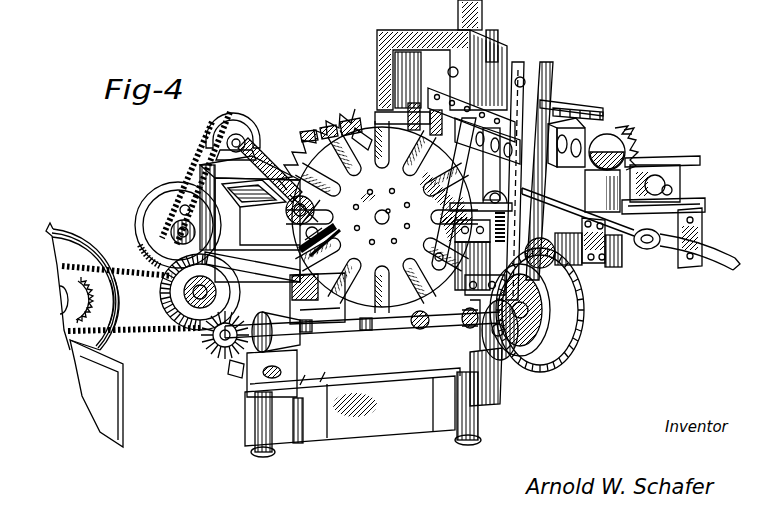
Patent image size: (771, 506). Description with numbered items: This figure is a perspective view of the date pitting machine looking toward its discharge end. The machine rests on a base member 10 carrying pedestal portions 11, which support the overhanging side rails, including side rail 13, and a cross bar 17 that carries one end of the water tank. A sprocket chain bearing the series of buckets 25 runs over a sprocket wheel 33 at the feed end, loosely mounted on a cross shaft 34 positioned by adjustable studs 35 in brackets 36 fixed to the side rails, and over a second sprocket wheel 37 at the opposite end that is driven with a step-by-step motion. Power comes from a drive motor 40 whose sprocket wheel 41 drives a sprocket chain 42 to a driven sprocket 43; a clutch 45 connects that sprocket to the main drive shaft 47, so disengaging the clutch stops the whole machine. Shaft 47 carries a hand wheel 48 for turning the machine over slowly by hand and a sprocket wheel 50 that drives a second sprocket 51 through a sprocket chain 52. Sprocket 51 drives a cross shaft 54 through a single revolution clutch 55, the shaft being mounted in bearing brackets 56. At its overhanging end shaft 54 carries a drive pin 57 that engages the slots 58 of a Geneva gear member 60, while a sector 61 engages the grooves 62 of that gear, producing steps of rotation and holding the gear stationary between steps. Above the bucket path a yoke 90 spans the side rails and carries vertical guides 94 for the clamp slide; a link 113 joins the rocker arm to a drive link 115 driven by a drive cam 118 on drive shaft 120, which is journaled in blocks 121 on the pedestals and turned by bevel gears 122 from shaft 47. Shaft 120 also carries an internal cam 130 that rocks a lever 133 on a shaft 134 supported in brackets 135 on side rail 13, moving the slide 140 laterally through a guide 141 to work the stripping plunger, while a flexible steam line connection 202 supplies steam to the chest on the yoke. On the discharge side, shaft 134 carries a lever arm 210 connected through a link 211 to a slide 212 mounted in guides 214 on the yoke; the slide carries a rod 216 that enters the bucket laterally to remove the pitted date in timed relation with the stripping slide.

The base member 10 is at (380, 455).
The pedestal portions 11 is at (433, 431).
The side rail 13 is at (704, 224).
The cross bar 17 is at (205, 192).
The buckets 25 is at (624, 140).
The sprocket wheel 33 is at (648, 146).
The cross shaft 34 is at (690, 200).
The adjustable studs 35 is at (675, 172).
The brackets 36 is at (660, 172).
The sprocket wheel 37 is at (338, 146).
The drive motor 40 is at (58, 232).
The sprocket wheel 41 is at (70, 318).
The sprocket chain 42 is at (137, 345).
The driven sprocket 43 is at (172, 334).
The clutch 45 is at (165, 300).
The main drive shaft 47 is at (215, 366).
The hand wheel 48 is at (140, 206).
The sprocket wheel 50 is at (172, 232).
The second sprocket 51 is at (228, 112).
The sprocket chain 52 is at (205, 172).
The cross shaft 54 is at (262, 128).
The single revolution clutch 55 is at (243, 128).
The bearing brackets 56 is at (215, 146).
The drive pin 57 is at (292, 278).
The slots 58 is at (318, 250).
The Geneva gear member 60 is at (322, 336).
The sector 61 is at (308, 236).
The grooves 62 is at (346, 336).
The yoke 90 is at (430, 30).
The guides 94 is at (484, 28).
The link 113 is at (556, 100).
The drive link 115 is at (494, 378).
The drive cam 118 is at (518, 368).
The drive shaft 120 is at (380, 330).
The blocks 121 is at (560, 352).
The bevel gears 122 is at (236, 372).
The internal cam 130 is at (584, 328).
The lever 133 is at (596, 264).
The shaft 134 is at (575, 268).
The brackets 135 is at (640, 252).
The slide 140 is at (606, 128).
The guide 141 is at (566, 116).
The flexible steam line connection 202 is at (722, 268).
The lever arm 210 is at (380, 112).
The link 211 is at (534, 58).
The slide 212 is at (520, 76).
The guides 214 is at (448, 90).
The rod 216 is at (396, 80).